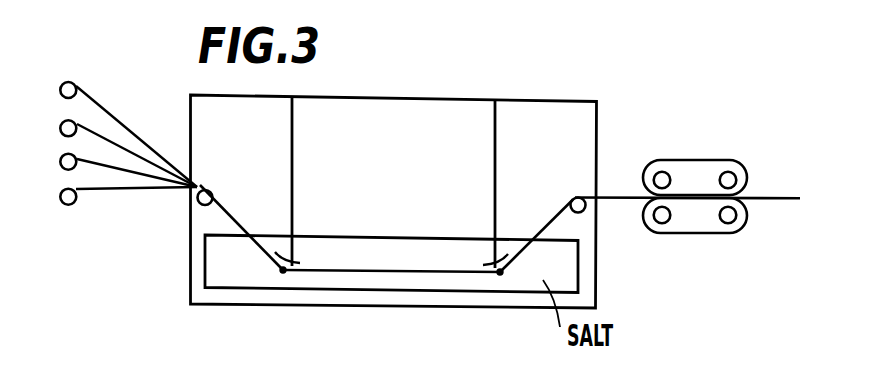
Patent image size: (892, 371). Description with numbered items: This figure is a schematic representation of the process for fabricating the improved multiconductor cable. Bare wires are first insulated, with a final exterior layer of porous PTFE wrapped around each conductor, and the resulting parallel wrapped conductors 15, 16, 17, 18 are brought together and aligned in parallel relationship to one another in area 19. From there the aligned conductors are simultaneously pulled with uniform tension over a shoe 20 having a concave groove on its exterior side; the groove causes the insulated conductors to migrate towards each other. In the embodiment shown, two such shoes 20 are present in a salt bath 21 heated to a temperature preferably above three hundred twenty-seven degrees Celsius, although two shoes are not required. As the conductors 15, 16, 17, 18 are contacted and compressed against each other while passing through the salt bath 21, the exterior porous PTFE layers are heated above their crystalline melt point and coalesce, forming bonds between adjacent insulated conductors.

The wrapped conductor 15 is at (55, 87).
The wrapped conductor 16 is at (55, 125).
The wrapped conductor 17 is at (55, 161).
The wrapped conductor 18 is at (55, 196).
The area 19 is at (247, 195).
The shoe 20 is at (282, 272).
The salt bath 21 is at (382, 283).